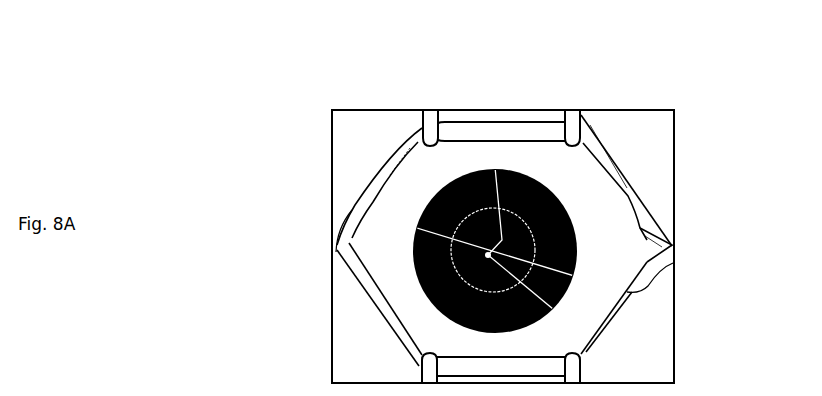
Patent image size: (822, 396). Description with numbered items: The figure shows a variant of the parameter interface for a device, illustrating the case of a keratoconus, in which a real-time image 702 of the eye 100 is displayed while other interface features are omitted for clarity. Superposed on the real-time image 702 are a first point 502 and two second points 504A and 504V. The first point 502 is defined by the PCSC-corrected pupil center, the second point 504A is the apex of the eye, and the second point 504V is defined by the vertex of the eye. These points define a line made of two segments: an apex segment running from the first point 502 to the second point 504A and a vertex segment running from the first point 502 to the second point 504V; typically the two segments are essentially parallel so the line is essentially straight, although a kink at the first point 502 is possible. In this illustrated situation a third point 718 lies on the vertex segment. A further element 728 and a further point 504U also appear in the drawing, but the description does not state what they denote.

The eye 100 is at (575, 188).
The real-time image 702 is at (674, 160).
The first point 502 is at (673, 262).
The second point 504A is at (495, 167).
The second point 504V is at (413, 227).
The third point 718 is at (577, 328).
The support member 728 is at (322, 395).
The sensor element 504U is at (249, 394).